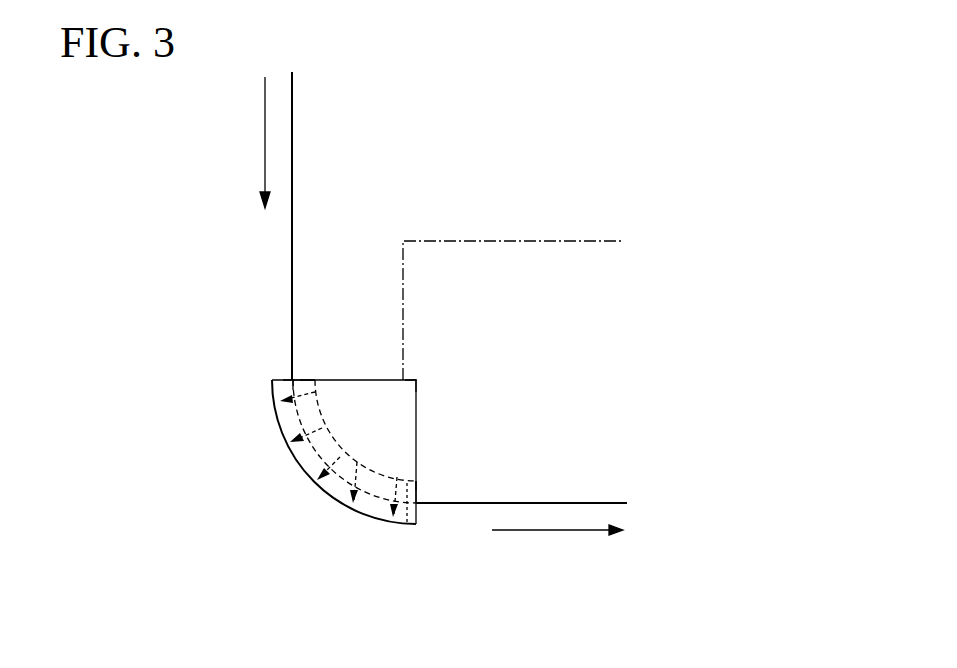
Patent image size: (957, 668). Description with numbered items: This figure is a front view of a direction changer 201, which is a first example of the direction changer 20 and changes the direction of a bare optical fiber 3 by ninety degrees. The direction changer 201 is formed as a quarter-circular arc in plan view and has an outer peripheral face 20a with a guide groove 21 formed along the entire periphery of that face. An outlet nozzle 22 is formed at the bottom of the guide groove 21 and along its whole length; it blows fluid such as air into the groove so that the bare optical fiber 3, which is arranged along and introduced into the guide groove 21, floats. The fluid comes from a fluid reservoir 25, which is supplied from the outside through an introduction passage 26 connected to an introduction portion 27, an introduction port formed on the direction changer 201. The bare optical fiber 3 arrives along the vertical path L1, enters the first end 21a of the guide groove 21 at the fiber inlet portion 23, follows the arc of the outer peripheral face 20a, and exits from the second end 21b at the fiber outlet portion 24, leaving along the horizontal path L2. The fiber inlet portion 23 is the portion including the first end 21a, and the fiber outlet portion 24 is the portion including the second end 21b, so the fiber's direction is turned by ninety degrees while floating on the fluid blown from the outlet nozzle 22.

The bare optical fiber 3 is at (443, 303).
The first optical path L1 is at (292, 193).
The second optical path L2 is at (580, 503).
The introduction passage 26 is at (580, 241).
The direction changer 20 is at (362, 440).
The direction changer 201 is at (362, 440).
The fluid reservoir 25 is at (380, 412).
The outer peripheral face 20a is at (293, 457).
The introduction portion 27 is at (405, 380).
The guide groove 21 is at (345, 480).
The outlet nozzle 22 is at (375, 478).
The first end of the guide groove 21a is at (314, 380).
The second end of the guide groove 21b is at (416, 482).
The fiber inlet portion 23 is at (293, 388).
The fiber outlet portion 24 is at (407, 524).